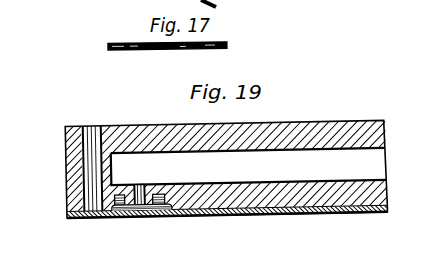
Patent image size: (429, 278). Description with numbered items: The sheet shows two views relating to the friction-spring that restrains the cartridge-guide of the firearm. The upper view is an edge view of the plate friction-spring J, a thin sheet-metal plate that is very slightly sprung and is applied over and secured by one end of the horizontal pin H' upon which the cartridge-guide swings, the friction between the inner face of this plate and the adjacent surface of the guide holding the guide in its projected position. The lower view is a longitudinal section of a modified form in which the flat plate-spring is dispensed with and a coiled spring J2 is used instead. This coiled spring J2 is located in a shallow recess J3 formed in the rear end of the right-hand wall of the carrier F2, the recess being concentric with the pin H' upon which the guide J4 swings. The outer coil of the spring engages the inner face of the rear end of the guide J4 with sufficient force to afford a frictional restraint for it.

In FIG. 17, the sheet-metal plate friction-spring J is at (215, 42).
In FIG. 19, the carrier F2 is at (288, 121).
In FIG. 19, the coiled spring J2 is at (97, 214).
In FIG. 19, the horizontal pin H' is at (139, 215).
In FIG. 19, the shallow recess J3 is at (175, 215).
In FIG. 19, the guide J4 is at (250, 210).